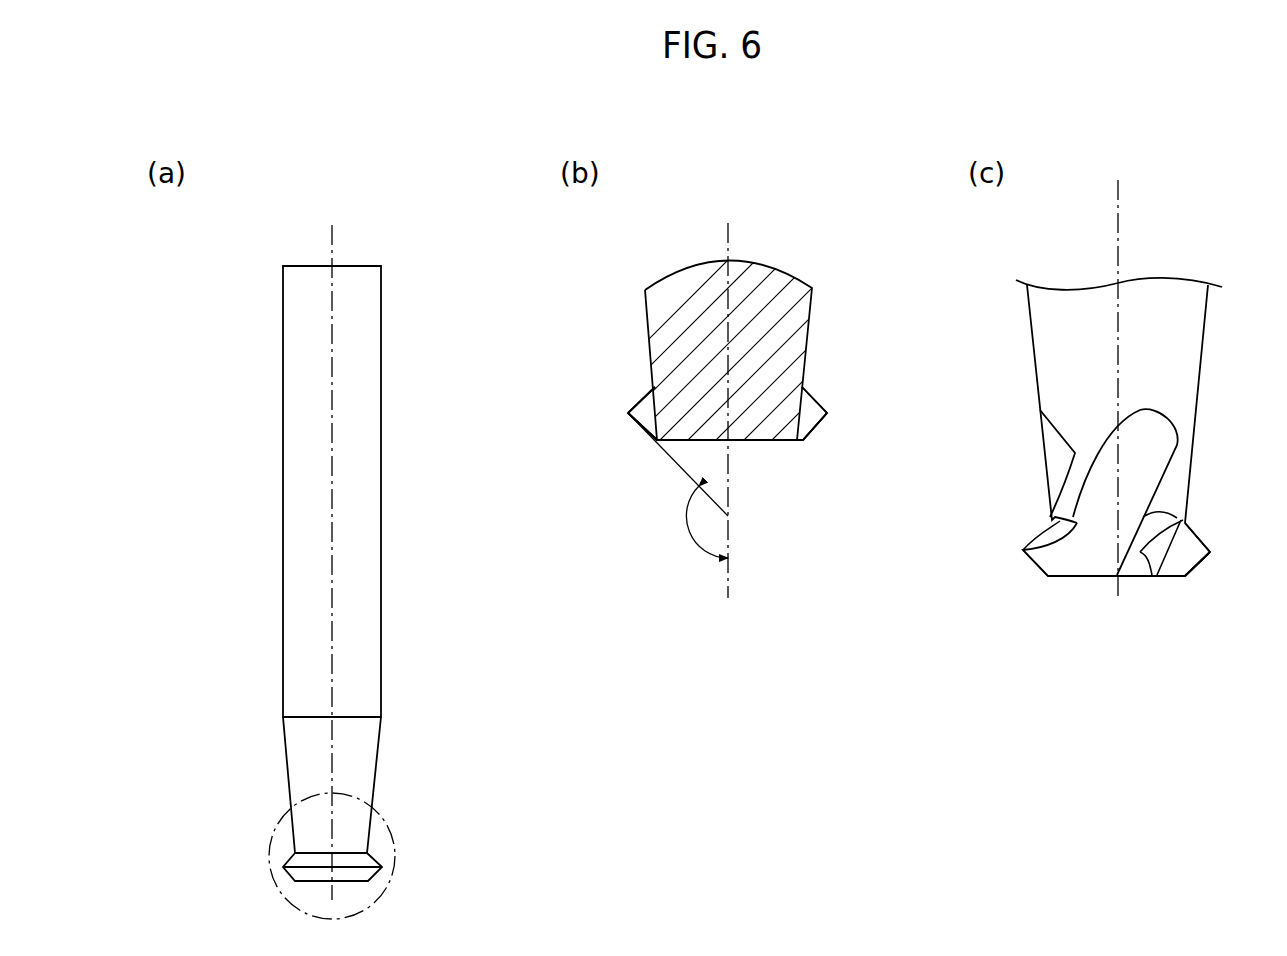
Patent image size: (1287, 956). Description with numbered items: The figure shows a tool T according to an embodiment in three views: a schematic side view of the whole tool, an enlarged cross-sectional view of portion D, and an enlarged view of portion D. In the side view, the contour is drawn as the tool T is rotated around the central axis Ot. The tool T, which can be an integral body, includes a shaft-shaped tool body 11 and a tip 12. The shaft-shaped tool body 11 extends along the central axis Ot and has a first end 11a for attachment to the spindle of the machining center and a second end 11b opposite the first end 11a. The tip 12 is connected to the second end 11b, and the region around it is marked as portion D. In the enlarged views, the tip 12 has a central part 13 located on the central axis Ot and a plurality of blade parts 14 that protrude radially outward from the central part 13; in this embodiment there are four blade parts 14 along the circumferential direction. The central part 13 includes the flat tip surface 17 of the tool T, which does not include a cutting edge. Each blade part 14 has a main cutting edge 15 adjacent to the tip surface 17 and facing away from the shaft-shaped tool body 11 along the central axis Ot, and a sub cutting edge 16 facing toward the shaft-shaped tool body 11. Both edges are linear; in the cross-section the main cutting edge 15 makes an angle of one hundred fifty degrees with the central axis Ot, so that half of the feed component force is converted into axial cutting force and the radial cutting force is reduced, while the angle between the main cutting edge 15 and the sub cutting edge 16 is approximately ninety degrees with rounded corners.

The tool T is at (226, 271).
The shaft-shaped tool body 11 is at (302, 489).
The first end 11a is at (372, 285).
The second end 11b is at (360, 833).
The tip 12 is at (283, 868).
The central part 13 is at (737, 432).
The blade parts 14 is at (638, 412).
The main cutting edge 15 is at (630, 422).
The sub cutting edge 16 is at (643, 395).
The tip surface 17 is at (768, 443).
The central axis Ot is at (333, 347).
The portion D is at (338, 857).